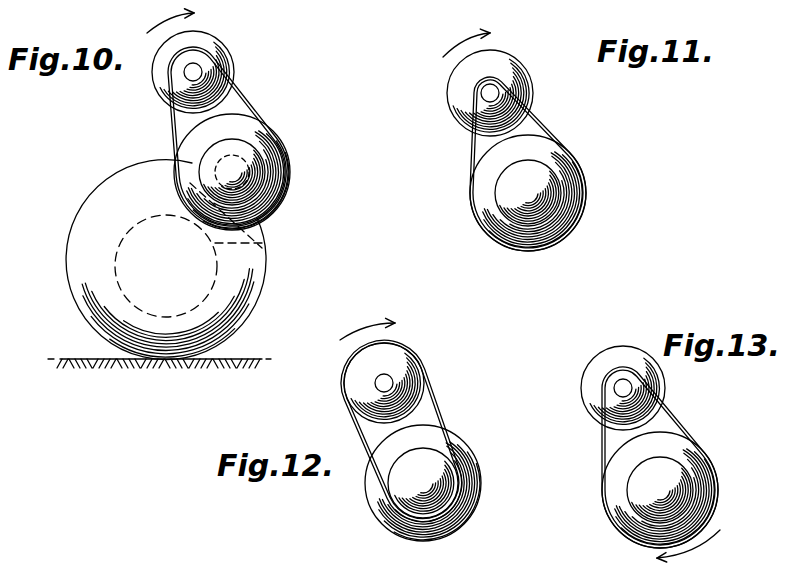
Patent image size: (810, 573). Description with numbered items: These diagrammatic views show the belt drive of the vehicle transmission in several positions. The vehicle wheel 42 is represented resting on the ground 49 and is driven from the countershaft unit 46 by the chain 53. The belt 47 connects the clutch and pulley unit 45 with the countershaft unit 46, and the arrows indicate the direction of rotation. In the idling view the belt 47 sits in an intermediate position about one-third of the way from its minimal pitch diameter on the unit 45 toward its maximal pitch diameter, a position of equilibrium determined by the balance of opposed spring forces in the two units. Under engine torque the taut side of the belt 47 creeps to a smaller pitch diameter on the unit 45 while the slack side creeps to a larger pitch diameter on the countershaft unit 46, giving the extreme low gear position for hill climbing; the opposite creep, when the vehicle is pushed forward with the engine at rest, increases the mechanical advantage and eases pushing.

In FIG. 10, the vehicle wheel 42 is at (94, 213).
In FIG. 10, the clutch and pulley unit 45 is at (233, 41).
In FIG. 11, the clutch and pulley unit 45 is at (528, 60).
In FIG. 12, the clutch and pulley unit 45 is at (427, 356).
In FIG. 13, the clutch and pulley unit 45 is at (618, 343).
In FIG. 10, the countershaft unit 46 is at (298, 152).
In FIG. 11, the countershaft unit 46 is at (598, 184).
In FIG. 12, the countershaft unit 46 is at (483, 466).
In FIG. 13, the countershaft unit 46 is at (720, 479).
In FIG. 10, the belt 47 is at (177, 125).
In FIG. 11, the belt 47 is at (546, 122).
In FIG. 12, the belt 47 is at (443, 408).
In FIG. 13, the belt 47 is at (676, 418).
In FIG. 10, the ground 49 is at (232, 359).
In FIG. 10, the chain 53 is at (263, 243).